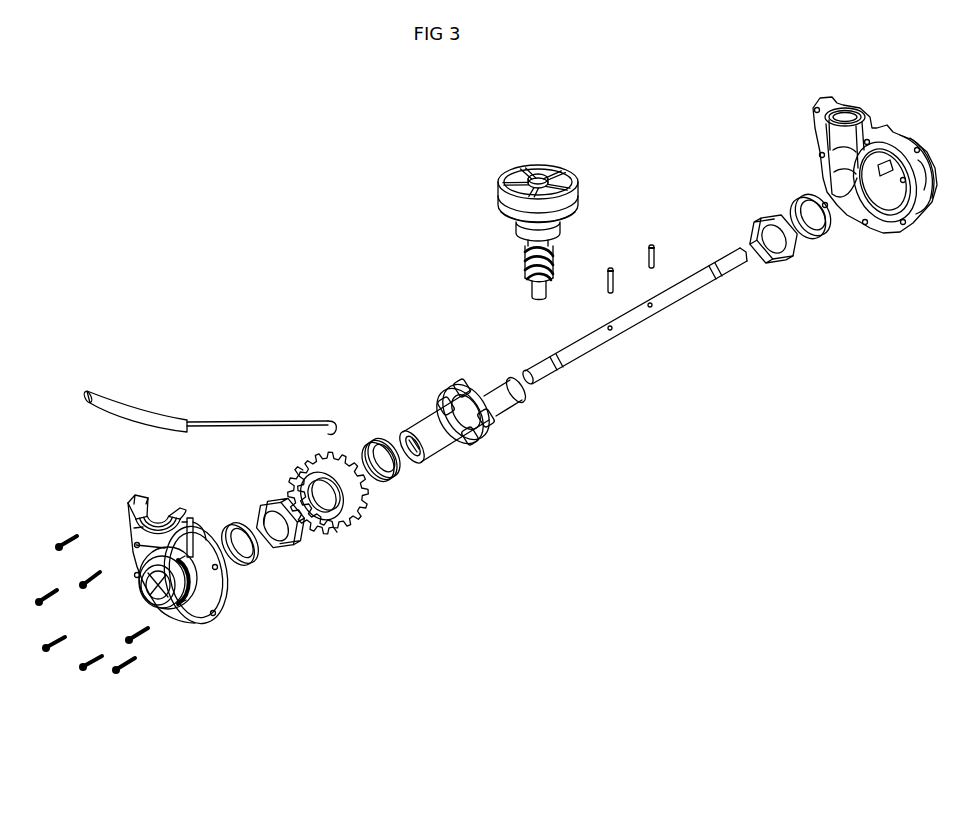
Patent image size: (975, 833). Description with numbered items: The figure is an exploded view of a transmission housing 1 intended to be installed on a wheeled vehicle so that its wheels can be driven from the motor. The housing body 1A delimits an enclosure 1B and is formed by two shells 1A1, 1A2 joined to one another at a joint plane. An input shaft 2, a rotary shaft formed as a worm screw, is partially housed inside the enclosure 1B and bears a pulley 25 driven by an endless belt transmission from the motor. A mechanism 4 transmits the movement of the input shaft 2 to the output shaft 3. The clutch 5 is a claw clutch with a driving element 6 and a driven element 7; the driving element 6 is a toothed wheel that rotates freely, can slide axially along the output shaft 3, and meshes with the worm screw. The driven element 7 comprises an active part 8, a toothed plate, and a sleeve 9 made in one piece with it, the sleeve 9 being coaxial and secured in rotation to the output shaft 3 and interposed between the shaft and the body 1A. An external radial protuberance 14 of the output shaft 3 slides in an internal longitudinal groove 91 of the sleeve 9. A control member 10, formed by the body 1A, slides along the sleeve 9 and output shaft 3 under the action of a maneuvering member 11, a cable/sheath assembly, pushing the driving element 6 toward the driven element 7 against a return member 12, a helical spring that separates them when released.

The transmission housing 1 is at (100, 495).
The housing body 1A is at (842, 93).
The shell 1A1 is at (225, 613).
The shell 1A2 is at (888, 238).
The enclosure 1B is at (778, 283).
The input shaft 2 is at (523, 253).
The output shaft 3 is at (693, 300).
The mechanism for transmitting the movement 4 is at (288, 410).
The clutch 5 is at (396, 508).
The driving element 6 is at (334, 530).
The driven element 7 is at (432, 277).
The active part of the clutch 8 is at (453, 380).
The sleeve 9 is at (427, 415).
The convergence control member 10 is at (193, 640).
The member for maneuvering the control member 11 is at (132, 410).
The return member 12 is at (373, 437).
The external radial protuberance 14 is at (660, 247).
The pulley 25 is at (562, 165).
The internal longitudinal groove 91 is at (408, 442).